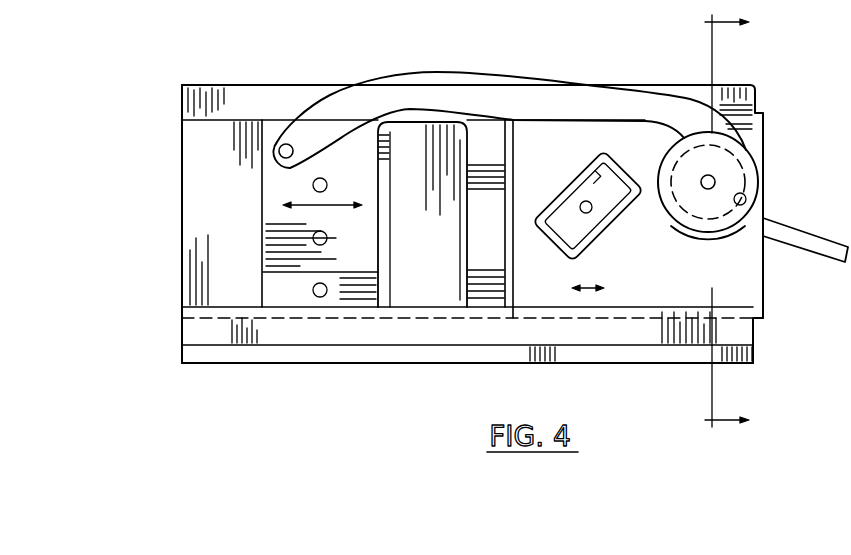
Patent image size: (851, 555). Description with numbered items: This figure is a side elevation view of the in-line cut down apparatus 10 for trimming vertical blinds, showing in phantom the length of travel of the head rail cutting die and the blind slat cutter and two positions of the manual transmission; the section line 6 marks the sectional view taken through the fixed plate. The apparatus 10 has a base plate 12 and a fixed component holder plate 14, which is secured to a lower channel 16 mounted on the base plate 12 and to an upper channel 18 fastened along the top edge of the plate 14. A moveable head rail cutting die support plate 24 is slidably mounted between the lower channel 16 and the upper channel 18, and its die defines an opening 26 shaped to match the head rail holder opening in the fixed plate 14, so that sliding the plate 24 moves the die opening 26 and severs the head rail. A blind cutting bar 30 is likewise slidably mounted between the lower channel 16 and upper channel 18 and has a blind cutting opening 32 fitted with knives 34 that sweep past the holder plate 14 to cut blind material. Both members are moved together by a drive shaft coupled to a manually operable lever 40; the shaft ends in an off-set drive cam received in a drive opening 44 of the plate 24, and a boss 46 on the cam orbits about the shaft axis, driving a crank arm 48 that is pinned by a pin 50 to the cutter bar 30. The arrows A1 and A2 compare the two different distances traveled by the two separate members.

The in-line cut down apparatus 10 is at (768, 76).
The base plate 12 is at (225, 352).
The fixed component holder plate 14 is at (236, 232).
The lower channel 16 is at (742, 332).
The upper channel 18 is at (257, 85).
The moveable head rail cutting die support plate 24 is at (752, 283).
The head rail cutting die opening 26 is at (536, 212).
The blind cutting bar 30 is at (327, 290).
The blind cutting opening 32 is at (463, 267).
The knives 34 is at (390, 215).
The manually operable lever 40 is at (793, 230).
The drive opening 44 is at (703, 241).
The boss 46 is at (666, 160).
The crank arm 48 is at (478, 74).
The pin 50 is at (279, 146).
The arrow A1 is at (587, 293).
The arrow A2 is at (333, 203).
The section line 6- 6 is at (738, 222).